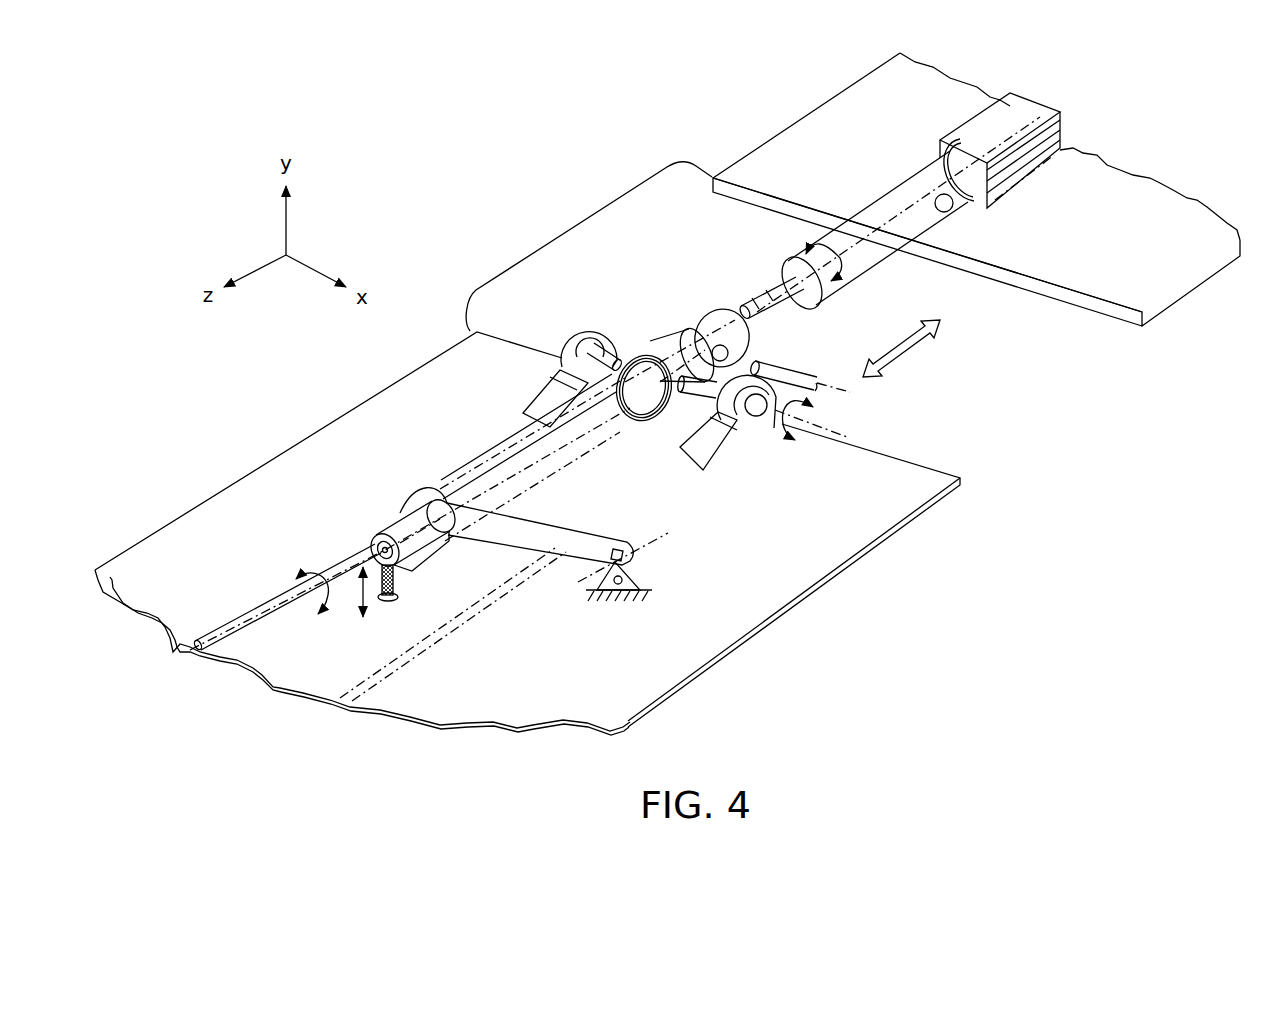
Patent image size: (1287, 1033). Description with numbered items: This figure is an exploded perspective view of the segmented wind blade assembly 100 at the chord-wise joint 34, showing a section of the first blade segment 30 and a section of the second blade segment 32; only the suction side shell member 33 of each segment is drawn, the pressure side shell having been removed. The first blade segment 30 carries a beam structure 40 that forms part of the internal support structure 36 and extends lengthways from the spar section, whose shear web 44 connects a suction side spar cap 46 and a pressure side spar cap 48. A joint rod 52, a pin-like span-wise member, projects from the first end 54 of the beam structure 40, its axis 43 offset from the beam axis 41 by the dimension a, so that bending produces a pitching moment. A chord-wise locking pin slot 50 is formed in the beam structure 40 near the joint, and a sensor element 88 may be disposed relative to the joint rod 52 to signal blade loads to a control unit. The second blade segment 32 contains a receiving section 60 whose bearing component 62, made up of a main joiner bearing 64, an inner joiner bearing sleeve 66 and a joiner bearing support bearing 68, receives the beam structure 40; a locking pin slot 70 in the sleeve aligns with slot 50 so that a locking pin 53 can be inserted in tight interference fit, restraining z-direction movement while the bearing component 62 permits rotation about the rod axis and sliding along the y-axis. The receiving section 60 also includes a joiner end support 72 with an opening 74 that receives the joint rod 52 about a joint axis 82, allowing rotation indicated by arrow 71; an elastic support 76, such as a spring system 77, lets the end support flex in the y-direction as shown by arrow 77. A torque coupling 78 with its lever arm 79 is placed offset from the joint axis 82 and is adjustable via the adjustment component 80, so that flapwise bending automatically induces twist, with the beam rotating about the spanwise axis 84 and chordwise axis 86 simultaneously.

The actuator system 100 is at (611, 108).
The first blade segment 30 is at (1156, 290).
The second blade segment 32 is at (888, 530).
The suction side shell member 33 is at (1152, 190).
The chord-wise joint 34 is at (560, 228).
The internal support structure 36 is at (916, 141).
The beam structure 40 is at (890, 268).
The axis of the beam structure 41 is at (900, 200).
The axis of the joint rod 43 is at (738, 272).
The shear web 44 is at (1066, 131).
The suction side spar cap 46 is at (1058, 170).
The pressure side spar cap 48 is at (962, 130).
The locking pin slot 50 is at (955, 210).
The joint rod 52 is at (775, 310).
The locking pin 53 is at (830, 390).
The first end of the beam structure 54 is at (830, 300).
The receiving section 60 is at (735, 525).
The bearing component 62 is at (603, 312).
The main joiner bearing 64 is at (642, 356).
The inner joiner bearing sleeve 66 is at (690, 328).
The joiner bearing support bearing 68 is at (528, 395).
The locking pin slot 70 is at (699, 316).
The arrow 71 is at (308, 574).
The joiner end support 72 is at (400, 518).
The opening 74 is at (360, 545).
The elastic support 76 is at (398, 584).
The spring system 77 is at (357, 612).
The torque coupling 78 is at (628, 548).
The lever arm 79 is at (662, 540).
The adjustment component 80 is at (645, 580).
The joint axis 82 is at (498, 468).
The spanwise axis 84 is at (560, 446).
The chordwise axis 86 is at (528, 336).
The sensor element 88 is at (770, 284).
The offset dimension a is at (811, 248).